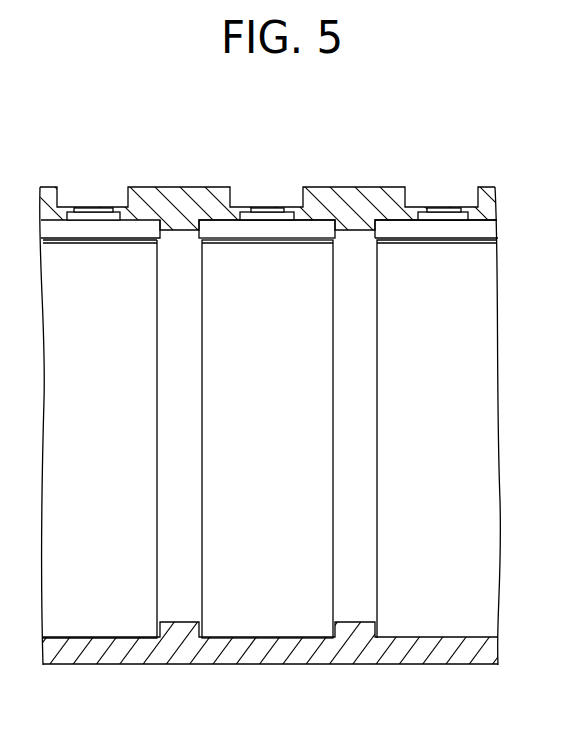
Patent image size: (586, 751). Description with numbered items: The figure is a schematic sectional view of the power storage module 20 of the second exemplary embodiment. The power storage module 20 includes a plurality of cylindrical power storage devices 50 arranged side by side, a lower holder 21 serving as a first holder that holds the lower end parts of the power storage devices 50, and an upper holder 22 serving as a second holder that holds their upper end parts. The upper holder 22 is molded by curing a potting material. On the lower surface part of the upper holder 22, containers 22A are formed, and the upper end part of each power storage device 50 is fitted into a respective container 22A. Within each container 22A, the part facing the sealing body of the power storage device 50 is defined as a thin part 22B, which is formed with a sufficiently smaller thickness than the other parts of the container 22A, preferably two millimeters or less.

The power storage module 20 is at (507, 145).
The lower holder 21 is at (430, 652).
The upper holder 22 is at (357, 195).
The container 22A is at (223, 226).
The thin part 22B is at (269, 204).
The power storage device 50 is at (270, 575).